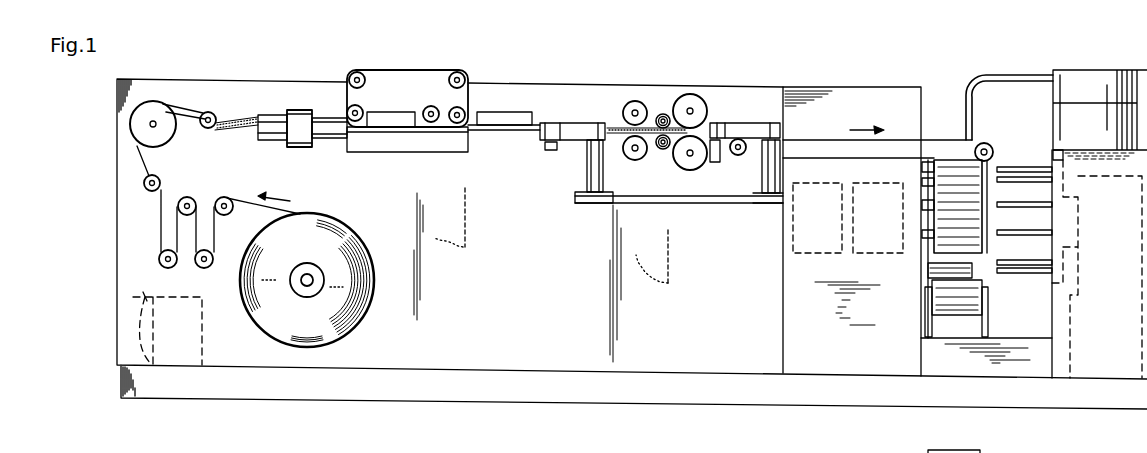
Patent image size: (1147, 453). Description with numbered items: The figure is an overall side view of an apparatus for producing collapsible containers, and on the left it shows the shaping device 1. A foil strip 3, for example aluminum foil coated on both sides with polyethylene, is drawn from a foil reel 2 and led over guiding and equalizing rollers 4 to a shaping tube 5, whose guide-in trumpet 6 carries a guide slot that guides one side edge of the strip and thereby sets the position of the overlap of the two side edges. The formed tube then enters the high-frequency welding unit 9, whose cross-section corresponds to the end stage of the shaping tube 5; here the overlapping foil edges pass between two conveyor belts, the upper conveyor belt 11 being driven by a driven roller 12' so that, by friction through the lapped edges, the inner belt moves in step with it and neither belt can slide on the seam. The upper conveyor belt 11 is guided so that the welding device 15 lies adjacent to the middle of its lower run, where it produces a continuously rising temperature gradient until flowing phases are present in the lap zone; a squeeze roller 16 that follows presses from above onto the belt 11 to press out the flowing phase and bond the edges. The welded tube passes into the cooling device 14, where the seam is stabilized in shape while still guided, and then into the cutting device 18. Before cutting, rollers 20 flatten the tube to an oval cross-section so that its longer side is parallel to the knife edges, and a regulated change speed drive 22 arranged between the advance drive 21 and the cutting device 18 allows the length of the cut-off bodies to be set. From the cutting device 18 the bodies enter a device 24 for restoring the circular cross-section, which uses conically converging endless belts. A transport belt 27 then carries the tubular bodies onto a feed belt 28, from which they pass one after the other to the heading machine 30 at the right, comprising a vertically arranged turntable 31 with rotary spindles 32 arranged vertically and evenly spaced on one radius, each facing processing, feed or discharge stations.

The shaping device 1 is at (426, 404).
The foil reel 2 is at (336, 230).
The foil strip 3 is at (160, 220).
The guiding and equalizing rollers 4 is at (160, 110).
The shaping tube 5 is at (330, 120).
The guide-in trumpet 6 is at (280, 117).
The high-frequency welding unit 9 is at (400, 74).
The conveyor belt 11 is at (433, 71).
The driven roller 12' is at (427, 126).
The cooling device 14 is at (503, 118).
The welding device 15 is at (402, 116).
The squeeze roller 16 is at (426, 128).
The cutting device 18 is at (692, 102).
The rollers 20 is at (660, 117).
The advance drive 21 is at (567, 130).
The regulated change speed drive 22 is at (117, 305).
The device for restoring the circular cross-section 24 is at (737, 128).
The transport belt 27 is at (832, 142).
The feed belt 28 is at (950, 163).
The heading machine 30 is at (815, 411).
The turntable 31 is at (1057, 178).
The rotary spindles 32 is at (1000, 172).